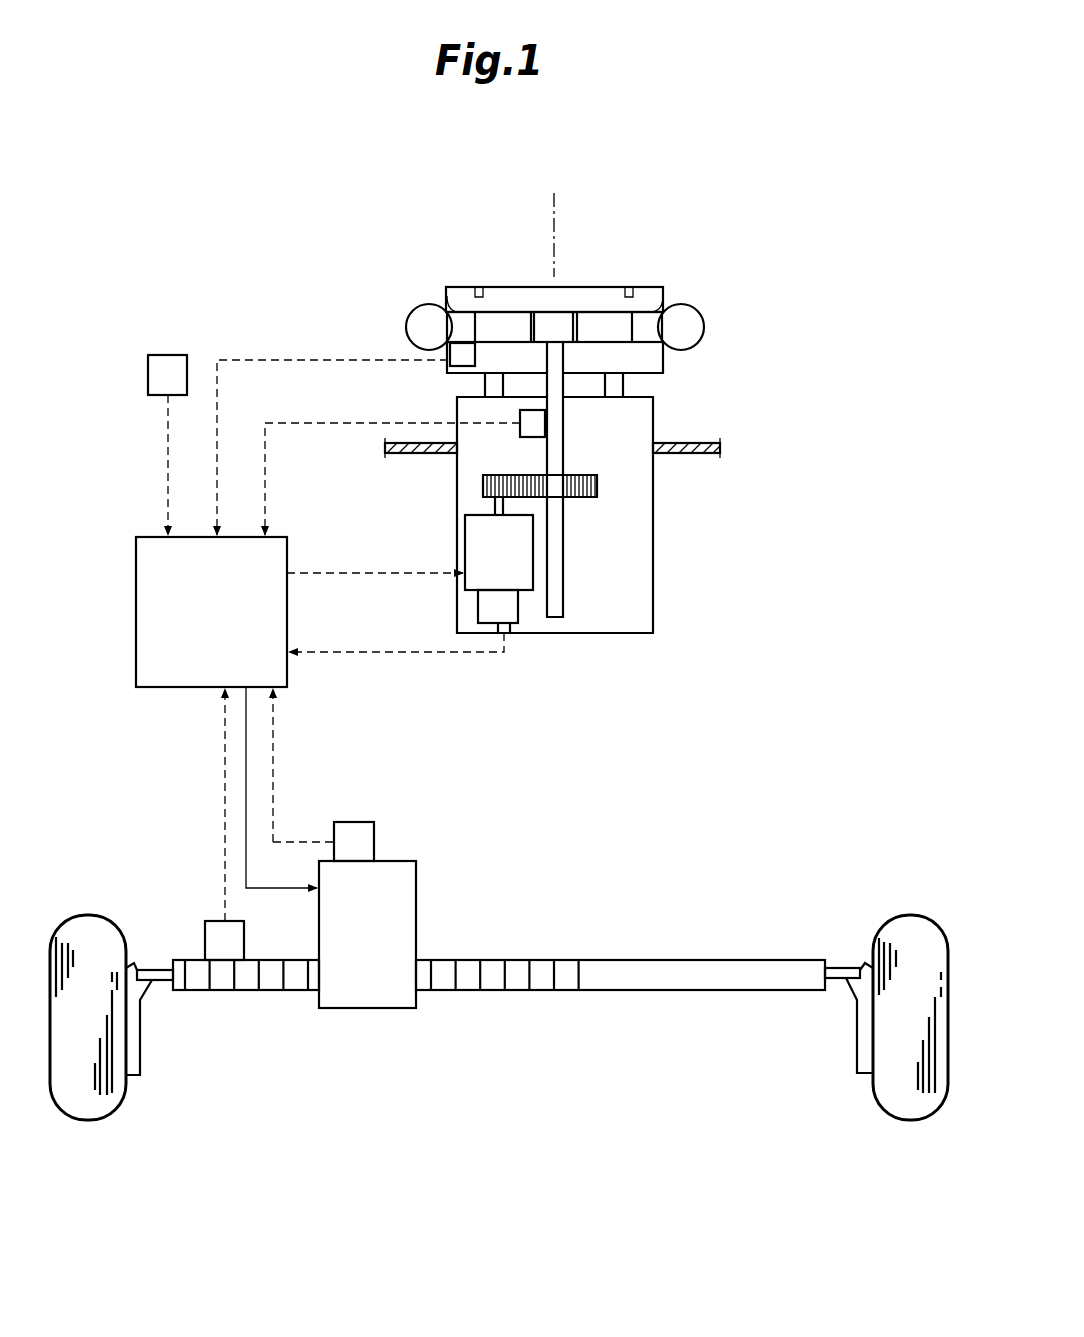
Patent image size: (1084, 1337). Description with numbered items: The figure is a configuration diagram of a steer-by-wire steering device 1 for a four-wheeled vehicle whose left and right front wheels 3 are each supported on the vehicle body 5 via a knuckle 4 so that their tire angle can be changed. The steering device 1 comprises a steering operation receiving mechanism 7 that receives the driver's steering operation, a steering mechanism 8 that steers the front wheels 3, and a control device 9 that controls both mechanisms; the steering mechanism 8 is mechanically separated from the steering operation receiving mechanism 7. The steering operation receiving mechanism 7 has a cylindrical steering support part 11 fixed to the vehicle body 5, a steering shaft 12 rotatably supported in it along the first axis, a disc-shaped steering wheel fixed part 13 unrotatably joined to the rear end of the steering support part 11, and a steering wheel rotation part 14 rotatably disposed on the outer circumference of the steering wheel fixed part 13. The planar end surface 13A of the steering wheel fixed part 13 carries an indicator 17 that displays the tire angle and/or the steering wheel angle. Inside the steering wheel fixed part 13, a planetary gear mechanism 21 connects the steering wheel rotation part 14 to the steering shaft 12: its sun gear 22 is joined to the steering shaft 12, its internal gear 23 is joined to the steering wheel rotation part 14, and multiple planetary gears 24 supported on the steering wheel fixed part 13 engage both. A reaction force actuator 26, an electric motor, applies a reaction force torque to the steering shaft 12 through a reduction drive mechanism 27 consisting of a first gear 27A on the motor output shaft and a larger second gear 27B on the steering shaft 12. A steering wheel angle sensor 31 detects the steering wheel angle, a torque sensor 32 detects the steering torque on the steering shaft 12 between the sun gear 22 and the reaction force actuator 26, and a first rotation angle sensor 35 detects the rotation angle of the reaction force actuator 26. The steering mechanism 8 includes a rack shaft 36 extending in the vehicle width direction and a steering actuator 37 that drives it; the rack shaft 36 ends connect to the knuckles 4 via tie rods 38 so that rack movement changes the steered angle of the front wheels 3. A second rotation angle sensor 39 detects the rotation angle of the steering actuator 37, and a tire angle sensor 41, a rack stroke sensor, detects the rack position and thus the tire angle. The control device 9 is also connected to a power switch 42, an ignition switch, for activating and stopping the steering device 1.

The steering device 1 is at (192, 178).
The front wheel 3 is at (83, 1113).
The knuckle 4 is at (135, 1063).
The vehicle body 5 is at (698, 440).
The steering operation receiving mechanism 7 is at (672, 180).
The steering mechanism 8 is at (287, 1003).
The control device 9 is at (155, 687).
The steering support part 11 is at (653, 568).
The steering shaft 12 is at (557, 607).
The steering wheel fixed part 13 is at (458, 317).
The end surface 13A is at (568, 288).
The steering wheel rotation part 14 is at (690, 322).
The indicator 17 is at (478, 287).
The planetary gear mechanism 21 is at (632, 354).
The sun gear 22 is at (540, 313).
The internal gear 23 is at (446, 294).
The planetary gear 24 is at (498, 313).
The reaction force actuator 26 is at (472, 535).
The reduction drive mechanism 27 is at (588, 504).
The first gear 27A is at (490, 492).
The second gear 27B is at (597, 483).
The steering wheel angle sensor 31 is at (447, 370).
The torque sensor 32 is at (520, 420).
The first rotation angle sensor 35 is at (510, 623).
The rack shaft 36 is at (570, 985).
The steering actuator 37 is at (367, 1008).
The tie rod 38 is at (163, 982).
The second rotation angle sensor 39 is at (374, 842).
The tire angle sensor 41 is at (205, 938).
The power switch 42 is at (168, 355).